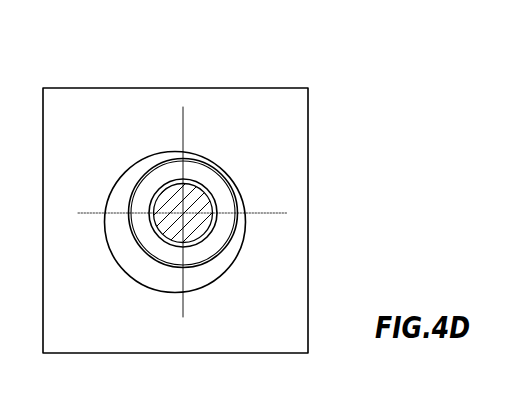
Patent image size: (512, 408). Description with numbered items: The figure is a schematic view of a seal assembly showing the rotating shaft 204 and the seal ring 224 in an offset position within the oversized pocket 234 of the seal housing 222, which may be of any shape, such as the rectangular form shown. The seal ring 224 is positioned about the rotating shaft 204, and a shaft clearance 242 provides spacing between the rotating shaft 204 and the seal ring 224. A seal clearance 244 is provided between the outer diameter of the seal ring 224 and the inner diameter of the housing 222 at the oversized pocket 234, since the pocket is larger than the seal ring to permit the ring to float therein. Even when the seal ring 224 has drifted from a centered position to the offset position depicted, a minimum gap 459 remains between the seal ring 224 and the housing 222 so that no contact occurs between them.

The seal housing 222 is at (195, 100).
The seal ring 224 is at (202, 172).
The minimum gap 459 is at (222, 172).
The shaft clearance 242 is at (162, 183).
The rotating shaft 204 is at (162, 227).
The seal clearance 244 is at (230, 256).
The oversized pocket 234 is at (187, 277).